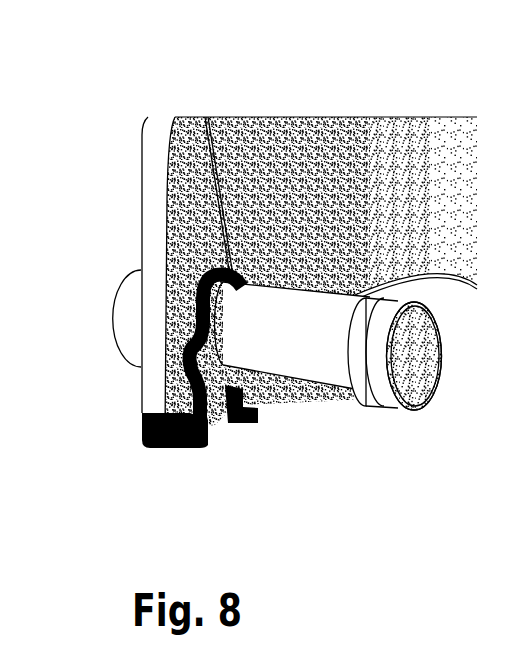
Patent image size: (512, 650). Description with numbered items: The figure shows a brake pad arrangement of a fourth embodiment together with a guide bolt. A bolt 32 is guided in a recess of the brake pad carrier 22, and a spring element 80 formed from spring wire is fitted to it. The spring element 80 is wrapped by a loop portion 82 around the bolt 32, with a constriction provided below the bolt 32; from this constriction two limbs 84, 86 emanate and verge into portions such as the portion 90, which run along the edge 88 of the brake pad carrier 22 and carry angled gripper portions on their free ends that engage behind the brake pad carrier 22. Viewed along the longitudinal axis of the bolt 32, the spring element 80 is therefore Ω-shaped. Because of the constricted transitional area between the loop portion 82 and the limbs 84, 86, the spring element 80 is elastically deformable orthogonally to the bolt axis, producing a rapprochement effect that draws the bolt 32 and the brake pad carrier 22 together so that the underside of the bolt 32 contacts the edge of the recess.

The brake pad carrier 22 is at (370, 148).
The bolt 32 is at (380, 362).
The spring element 80 is at (218, 260).
The loop portion 82 is at (200, 278).
The limb 84 is at (178, 446).
The limb 86 is at (251, 423).
The edge 88 is at (152, 167).
The portion 90 is at (153, 447).